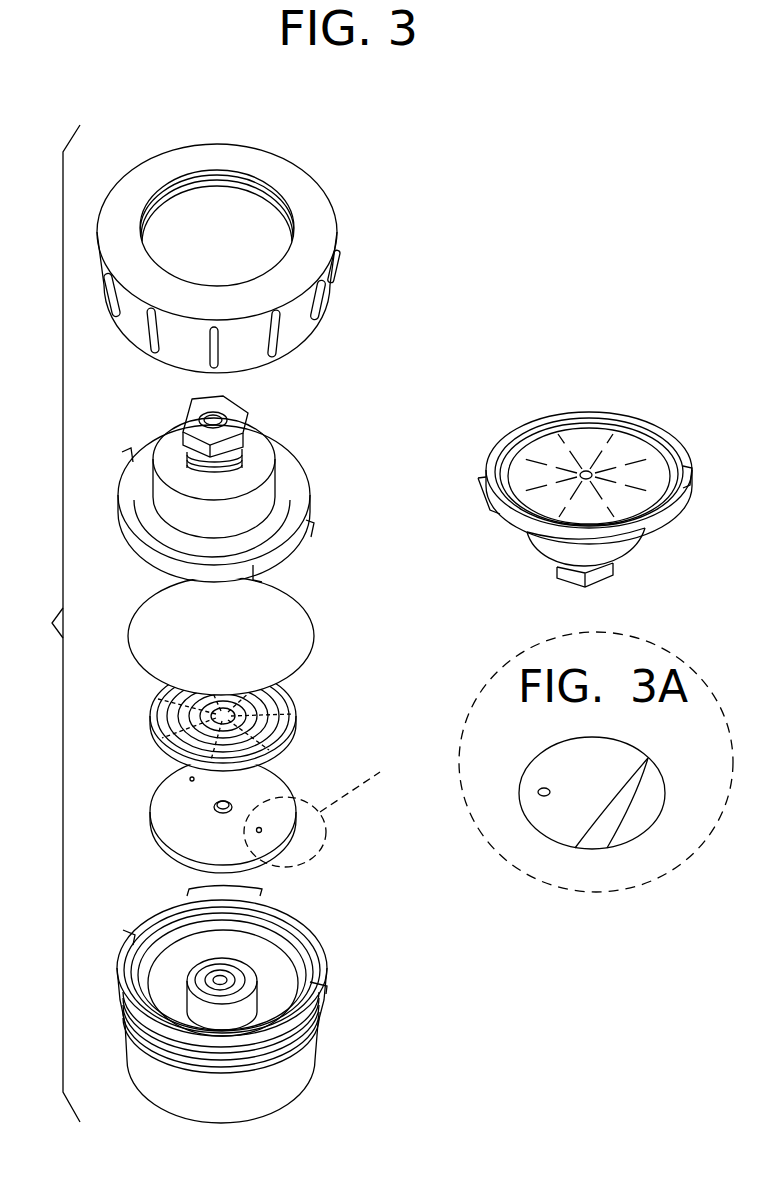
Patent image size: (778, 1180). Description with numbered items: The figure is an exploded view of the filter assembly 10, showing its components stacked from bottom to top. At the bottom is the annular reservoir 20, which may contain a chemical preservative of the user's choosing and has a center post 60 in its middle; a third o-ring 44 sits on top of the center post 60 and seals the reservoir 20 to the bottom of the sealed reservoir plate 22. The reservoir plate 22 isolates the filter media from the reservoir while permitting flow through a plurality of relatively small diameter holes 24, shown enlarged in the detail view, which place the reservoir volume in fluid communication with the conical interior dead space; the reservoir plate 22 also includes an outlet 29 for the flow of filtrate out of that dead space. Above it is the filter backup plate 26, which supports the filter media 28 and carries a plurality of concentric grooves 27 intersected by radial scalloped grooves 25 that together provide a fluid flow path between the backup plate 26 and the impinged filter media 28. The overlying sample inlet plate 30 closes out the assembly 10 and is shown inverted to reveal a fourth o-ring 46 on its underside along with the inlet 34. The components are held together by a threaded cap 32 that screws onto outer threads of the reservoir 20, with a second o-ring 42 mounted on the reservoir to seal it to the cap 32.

In FIG. 3, the filter assembly 10 is at (41, 623).
In FIG. 3, the annular reservoir 20 is at (248, 1005).
In FIG. 3, the reservoir plate 22 is at (256, 798).
In FIG. 3, the holes 24 is at (262, 832).
In FIG. 3A, the holes 24 is at (540, 788).
In FIG. 3, the radial scalloped grooves 25 is at (163, 717).
In FIG. 3, the filter backup plate 26 is at (226, 708).
In FIG. 3, the concentric grooves 27 is at (290, 720).
In FIG. 3, the filter media 28 is at (308, 610).
In FIG. 3, the outlet 29 is at (217, 805).
In FIG. 3, the sample inlet plate 30 is at (432, 498).
In FIG. 3, the threaded cap 32 is at (317, 238).
In FIG. 3, the inlet 34 is at (602, 572).
In FIG. 3, the second o-ring 42 is at (272, 1065).
In FIG. 3, the third o-ring 44 is at (229, 981).
In FIG. 3, the fourth o-ring 46 is at (660, 498).
In FIG. 3, the center post 60 is at (212, 968).